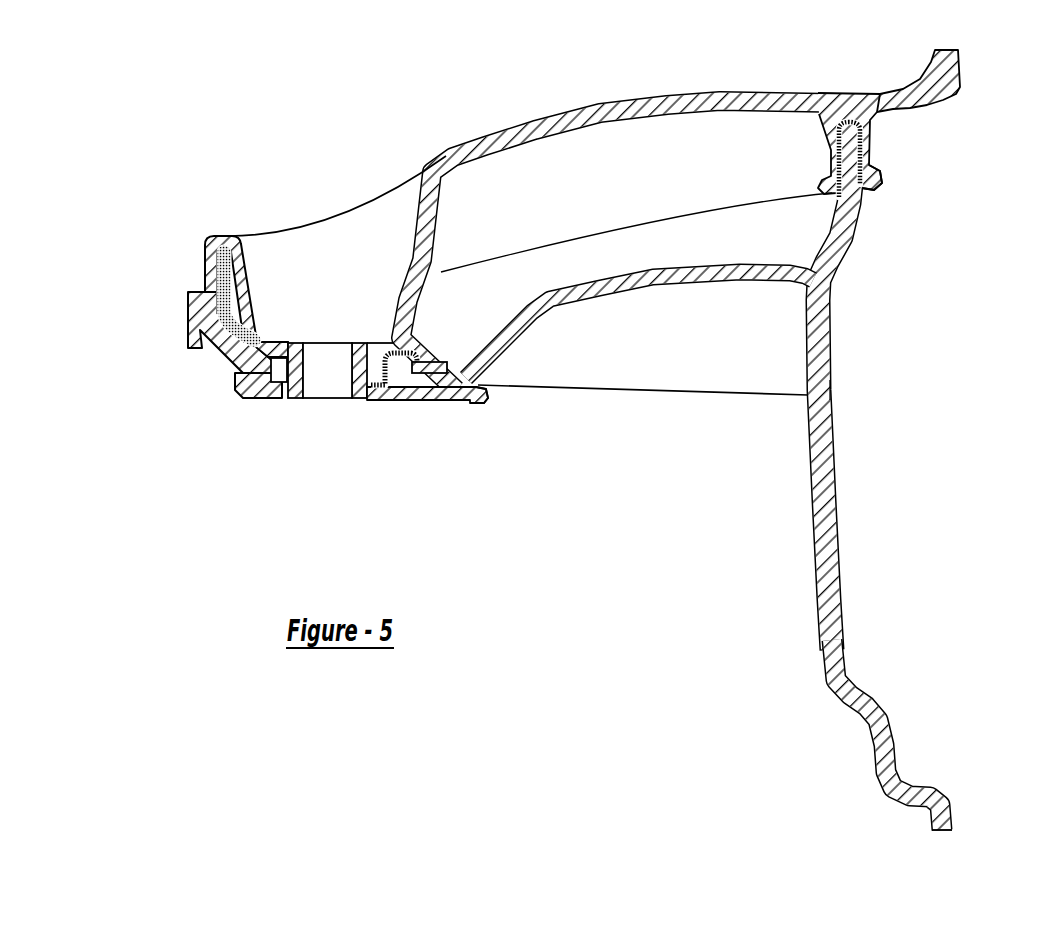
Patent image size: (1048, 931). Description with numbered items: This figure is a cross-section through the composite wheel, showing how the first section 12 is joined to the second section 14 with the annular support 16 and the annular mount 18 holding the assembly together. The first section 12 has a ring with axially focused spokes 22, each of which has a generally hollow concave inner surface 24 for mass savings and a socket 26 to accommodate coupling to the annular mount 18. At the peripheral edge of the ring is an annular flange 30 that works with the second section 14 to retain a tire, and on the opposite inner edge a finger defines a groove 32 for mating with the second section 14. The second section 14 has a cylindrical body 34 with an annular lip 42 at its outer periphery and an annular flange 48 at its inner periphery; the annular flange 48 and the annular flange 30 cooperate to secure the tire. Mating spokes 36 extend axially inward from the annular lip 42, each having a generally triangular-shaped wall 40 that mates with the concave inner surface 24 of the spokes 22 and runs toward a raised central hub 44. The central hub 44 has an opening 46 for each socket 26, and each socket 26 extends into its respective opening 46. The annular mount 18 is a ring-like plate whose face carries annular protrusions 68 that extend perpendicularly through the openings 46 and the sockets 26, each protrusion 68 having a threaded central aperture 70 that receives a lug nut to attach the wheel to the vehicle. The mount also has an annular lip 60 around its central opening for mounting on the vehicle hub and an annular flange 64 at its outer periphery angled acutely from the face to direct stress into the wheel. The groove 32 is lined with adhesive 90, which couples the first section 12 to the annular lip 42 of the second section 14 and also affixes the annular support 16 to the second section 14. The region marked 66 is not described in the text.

The first section 12 is at (846, 93).
The second section 14 is at (842, 553).
The annular support 16 is at (442, 356).
The annular mount 18 is at (459, 403).
The spoke 22 is at (720, 93).
The concave inner surface 24 is at (563, 192).
The socket 26 is at (336, 238).
The annular flange 30 is at (962, 57).
The groove 32 is at (878, 130).
The cylindrical body 34 is at (833, 392).
The mating spoke 36 is at (681, 364).
The triangular-shaped wall 40 is at (768, 245).
The annular lip 42 is at (878, 163).
The central hub 44 is at (210, 362).
The opening 46 is at (281, 390).
The annular flange 48 is at (950, 818).
The annular lip 60 is at (235, 378).
The annular flange 64 is at (485, 392).
The open region 66 is at (616, 532).
The annular protrusion 68 is at (293, 400).
The threaded central aperture 70 is at (318, 386).
The adhesive 90 is at (213, 318).